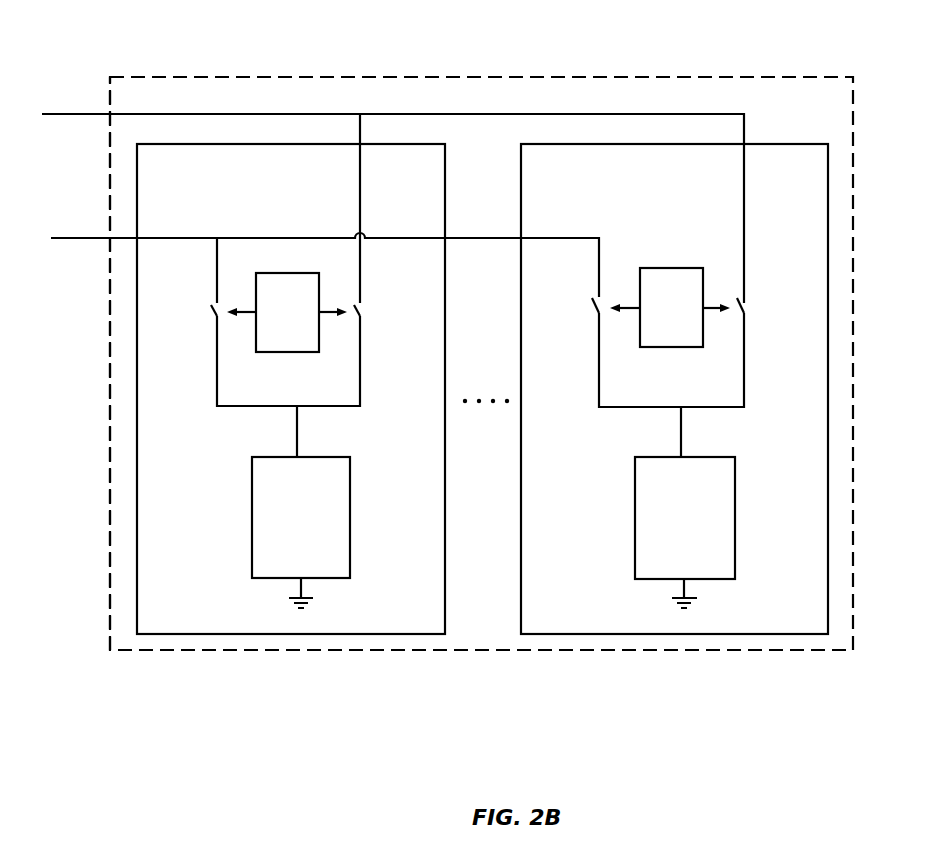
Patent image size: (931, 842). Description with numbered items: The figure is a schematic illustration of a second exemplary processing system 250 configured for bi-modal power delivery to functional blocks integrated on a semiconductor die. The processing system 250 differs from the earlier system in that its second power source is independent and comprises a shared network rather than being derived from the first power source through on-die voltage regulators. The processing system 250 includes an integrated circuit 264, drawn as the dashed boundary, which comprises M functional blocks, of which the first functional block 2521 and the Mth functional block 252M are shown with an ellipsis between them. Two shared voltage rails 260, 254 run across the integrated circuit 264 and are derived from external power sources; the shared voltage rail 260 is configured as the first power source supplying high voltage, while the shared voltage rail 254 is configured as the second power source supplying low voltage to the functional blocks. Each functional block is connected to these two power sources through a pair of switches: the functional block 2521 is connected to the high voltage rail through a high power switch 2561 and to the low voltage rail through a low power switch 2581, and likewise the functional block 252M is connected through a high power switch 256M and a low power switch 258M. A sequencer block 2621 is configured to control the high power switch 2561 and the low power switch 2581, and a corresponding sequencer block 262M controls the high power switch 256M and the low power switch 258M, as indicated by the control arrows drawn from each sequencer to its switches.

The processing system 250 is at (105, 46).
The integrated circuit 264 is at (110, 196).
The shared voltage rail 260 is at (467, 114).
The shared voltage rail 254 is at (467, 238).
The low power switch 2581 is at (209, 305).
The high power switch 2561 is at (368, 307).
The sequencer block 2621 is at (287, 273).
The functional block 2521 is at (332, 457).
The low power switch 258M is at (592, 299).
The high power switch 256M is at (750, 299).
The sequencer block 262M is at (670, 268).
The functional block 252M is at (702, 457).